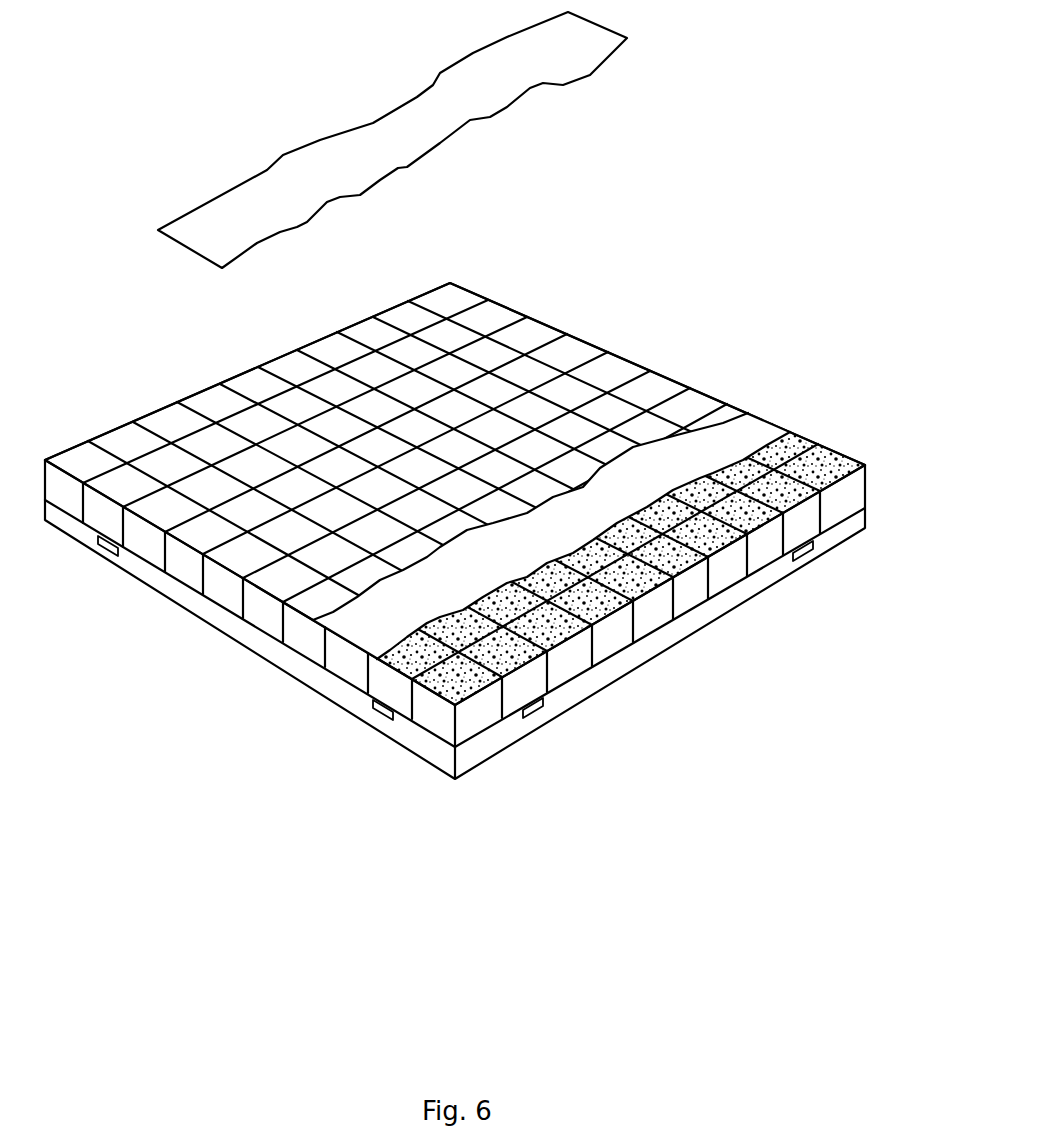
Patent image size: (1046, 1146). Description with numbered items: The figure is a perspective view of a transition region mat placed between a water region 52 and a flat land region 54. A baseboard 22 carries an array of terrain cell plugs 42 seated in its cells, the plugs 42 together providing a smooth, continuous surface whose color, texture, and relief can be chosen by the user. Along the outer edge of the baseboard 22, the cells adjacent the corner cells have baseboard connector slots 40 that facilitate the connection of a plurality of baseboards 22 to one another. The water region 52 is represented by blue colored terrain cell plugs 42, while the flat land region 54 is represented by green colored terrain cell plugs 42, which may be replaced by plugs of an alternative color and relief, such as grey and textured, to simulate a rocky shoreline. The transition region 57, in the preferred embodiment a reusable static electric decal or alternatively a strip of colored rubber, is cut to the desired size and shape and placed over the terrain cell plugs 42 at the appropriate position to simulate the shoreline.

The baseboard 22 is at (467, 772).
The baseboard connector slots 40 is at (107, 542).
The terrain cell plugs 42 is at (272, 622).
The water region 52 is at (840, 458).
The flat land region 54 is at (533, 330).
The transition region 57 is at (590, 35).